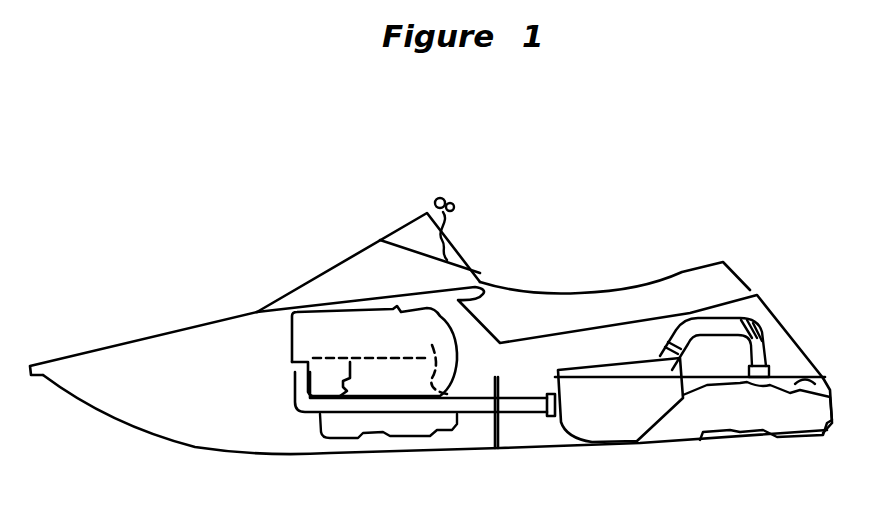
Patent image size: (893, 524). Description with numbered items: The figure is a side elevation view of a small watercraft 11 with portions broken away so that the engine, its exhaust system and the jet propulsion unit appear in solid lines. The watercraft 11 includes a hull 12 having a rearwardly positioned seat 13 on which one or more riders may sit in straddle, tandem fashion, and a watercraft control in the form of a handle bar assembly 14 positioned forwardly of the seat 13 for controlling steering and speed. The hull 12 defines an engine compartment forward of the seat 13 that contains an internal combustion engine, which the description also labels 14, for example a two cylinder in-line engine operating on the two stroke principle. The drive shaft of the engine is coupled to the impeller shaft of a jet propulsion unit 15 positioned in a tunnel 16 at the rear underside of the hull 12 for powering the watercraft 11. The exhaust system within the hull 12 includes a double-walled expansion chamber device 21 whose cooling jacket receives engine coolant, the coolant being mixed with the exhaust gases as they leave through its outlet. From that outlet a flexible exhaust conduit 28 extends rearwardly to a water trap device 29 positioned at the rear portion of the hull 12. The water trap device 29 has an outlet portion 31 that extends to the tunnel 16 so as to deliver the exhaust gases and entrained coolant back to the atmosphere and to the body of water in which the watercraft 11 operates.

The watercraft 11 is at (532, 256).
The hull 12 is at (103, 418).
The seat 13 is at (637, 285).
The handle bar assembly 14 is at (443, 200).
The jet propulsion unit 15 is at (750, 416).
The tunnel 16 is at (822, 378).
The expansion chamber device 21 is at (297, 312).
The flexible exhaust conduit 28 is at (285, 393).
The water trap device 29 is at (613, 430).
The outlet portion 31 is at (722, 317).